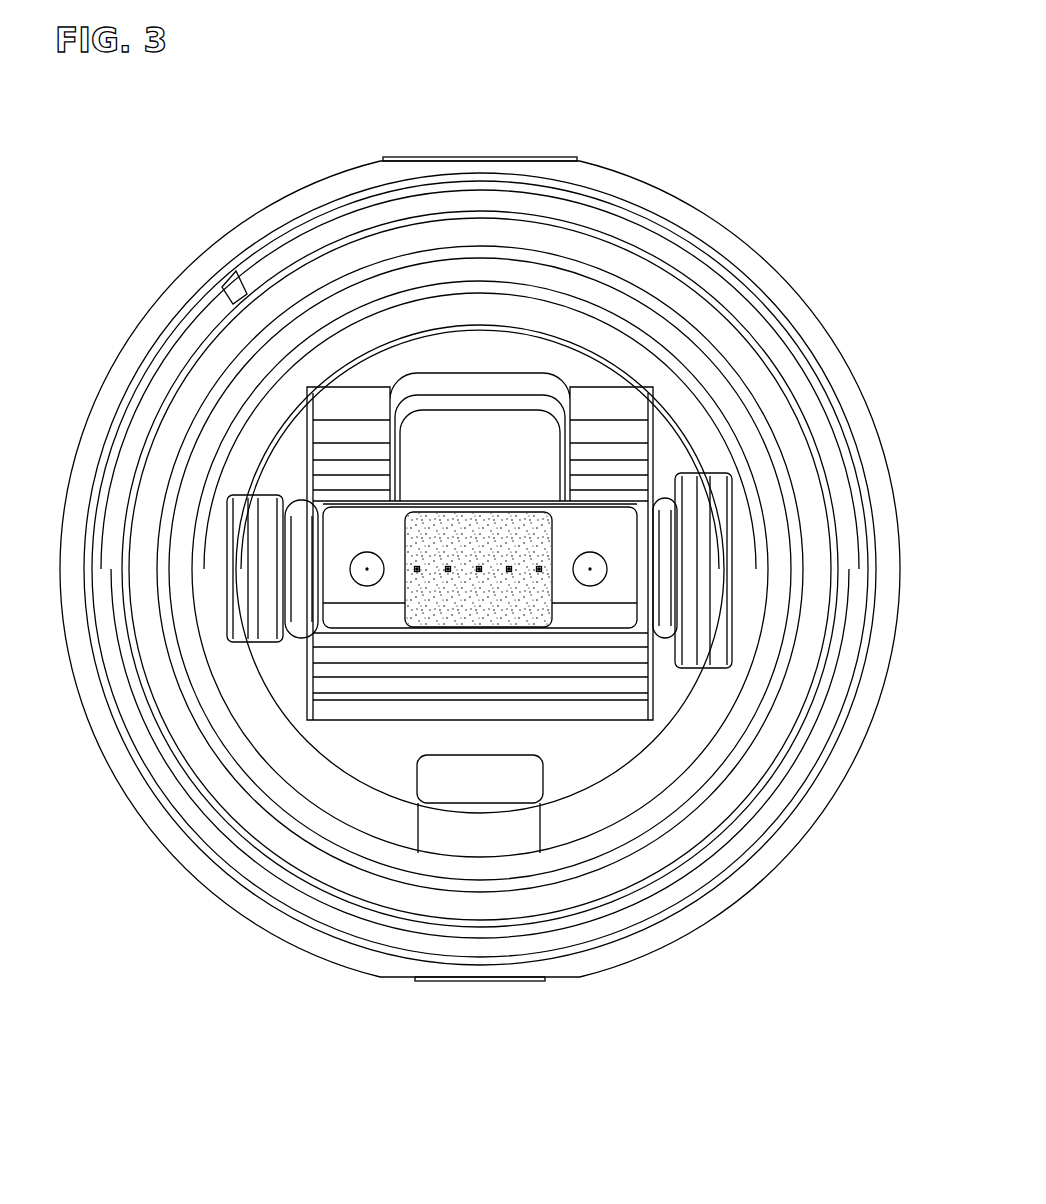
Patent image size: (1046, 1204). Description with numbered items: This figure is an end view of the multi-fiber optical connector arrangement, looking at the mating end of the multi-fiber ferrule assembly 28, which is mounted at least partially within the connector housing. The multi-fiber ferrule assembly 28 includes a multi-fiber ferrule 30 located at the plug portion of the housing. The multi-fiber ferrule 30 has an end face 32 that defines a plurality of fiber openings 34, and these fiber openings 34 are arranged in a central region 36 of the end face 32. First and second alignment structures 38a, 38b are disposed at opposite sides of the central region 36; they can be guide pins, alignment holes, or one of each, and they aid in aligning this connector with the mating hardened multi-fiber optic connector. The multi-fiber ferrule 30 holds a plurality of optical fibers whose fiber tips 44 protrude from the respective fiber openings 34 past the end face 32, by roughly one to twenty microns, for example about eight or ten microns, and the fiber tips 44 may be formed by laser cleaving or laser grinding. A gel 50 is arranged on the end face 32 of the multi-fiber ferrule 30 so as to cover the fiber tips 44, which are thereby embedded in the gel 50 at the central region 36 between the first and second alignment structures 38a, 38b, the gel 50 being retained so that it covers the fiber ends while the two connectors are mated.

The multi-fiber ferrule assembly 28 is at (653, 632).
The multi-fiber ferrule 30 is at (400, 487).
The end face 32 is at (335, 535).
The fiber openings 34 is at (511, 567).
The central region 36 is at (475, 486).
The first alignment structure 38a is at (360, 583).
The second alignment structure 38b is at (605, 556).
The fiber tips 44 is at (416, 572).
The gel 50 is at (532, 609).